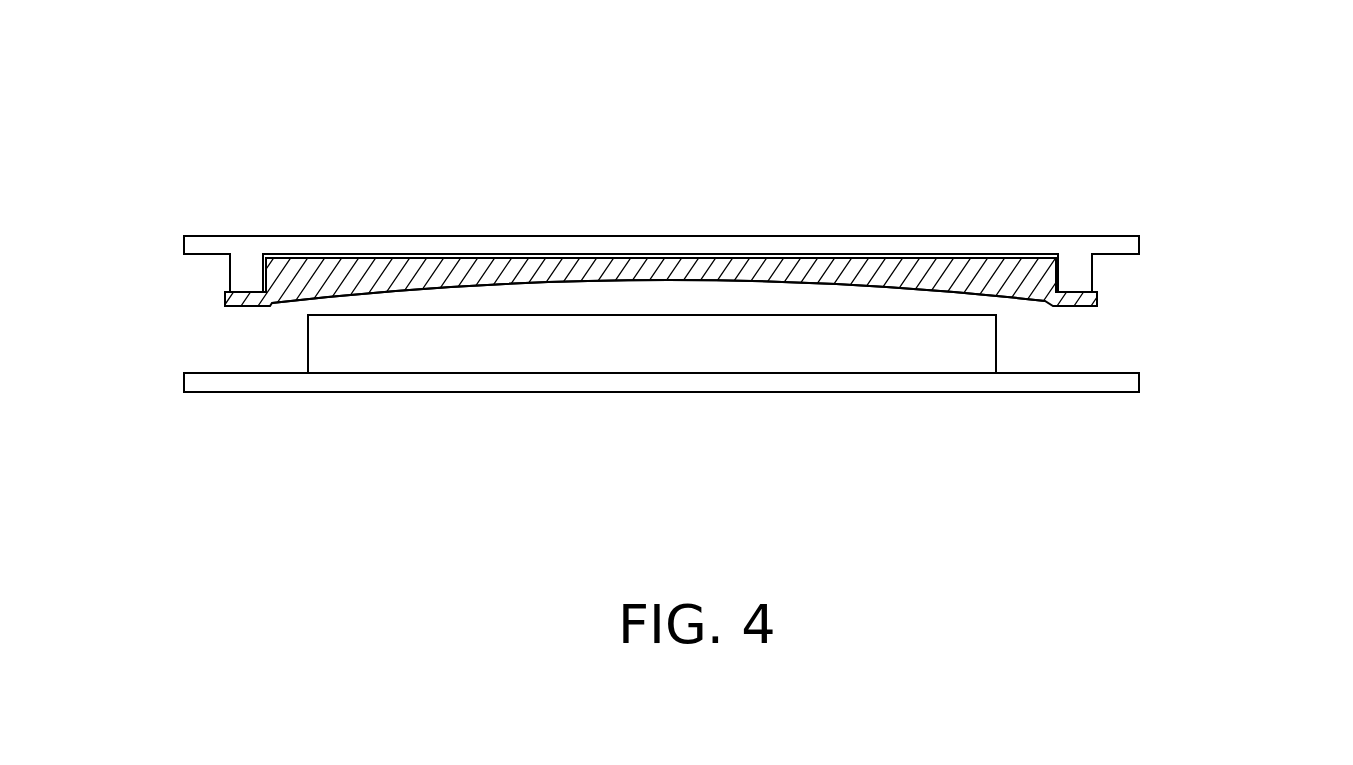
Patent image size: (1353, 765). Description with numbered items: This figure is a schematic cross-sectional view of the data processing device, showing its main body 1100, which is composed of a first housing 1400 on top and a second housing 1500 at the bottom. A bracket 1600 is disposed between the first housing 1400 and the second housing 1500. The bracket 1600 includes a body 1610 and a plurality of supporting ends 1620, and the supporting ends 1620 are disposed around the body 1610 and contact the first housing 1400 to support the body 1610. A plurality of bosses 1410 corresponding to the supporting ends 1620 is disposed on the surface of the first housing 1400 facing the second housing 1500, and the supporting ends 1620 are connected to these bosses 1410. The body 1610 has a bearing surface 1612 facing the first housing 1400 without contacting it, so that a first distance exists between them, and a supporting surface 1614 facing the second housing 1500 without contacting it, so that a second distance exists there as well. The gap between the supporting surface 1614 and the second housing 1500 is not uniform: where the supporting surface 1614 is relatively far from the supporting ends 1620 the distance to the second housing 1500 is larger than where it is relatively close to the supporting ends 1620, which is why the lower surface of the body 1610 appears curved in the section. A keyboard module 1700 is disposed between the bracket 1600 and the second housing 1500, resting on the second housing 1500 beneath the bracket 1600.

The main body 1100 is at (238, 190).
The first housing 1400 is at (1010, 243).
The boss 1410 is at (237, 273).
The second housing 1500 is at (1127, 381).
The bracket 1600 is at (1250, 212).
The body 1610 is at (1035, 314).
The bearing surface 1612 is at (1038, 245).
The supporting surface 1614 is at (1043, 318).
The supporting end 1620 is at (1097, 298).
The keyboard module 1700 is at (957, 358).